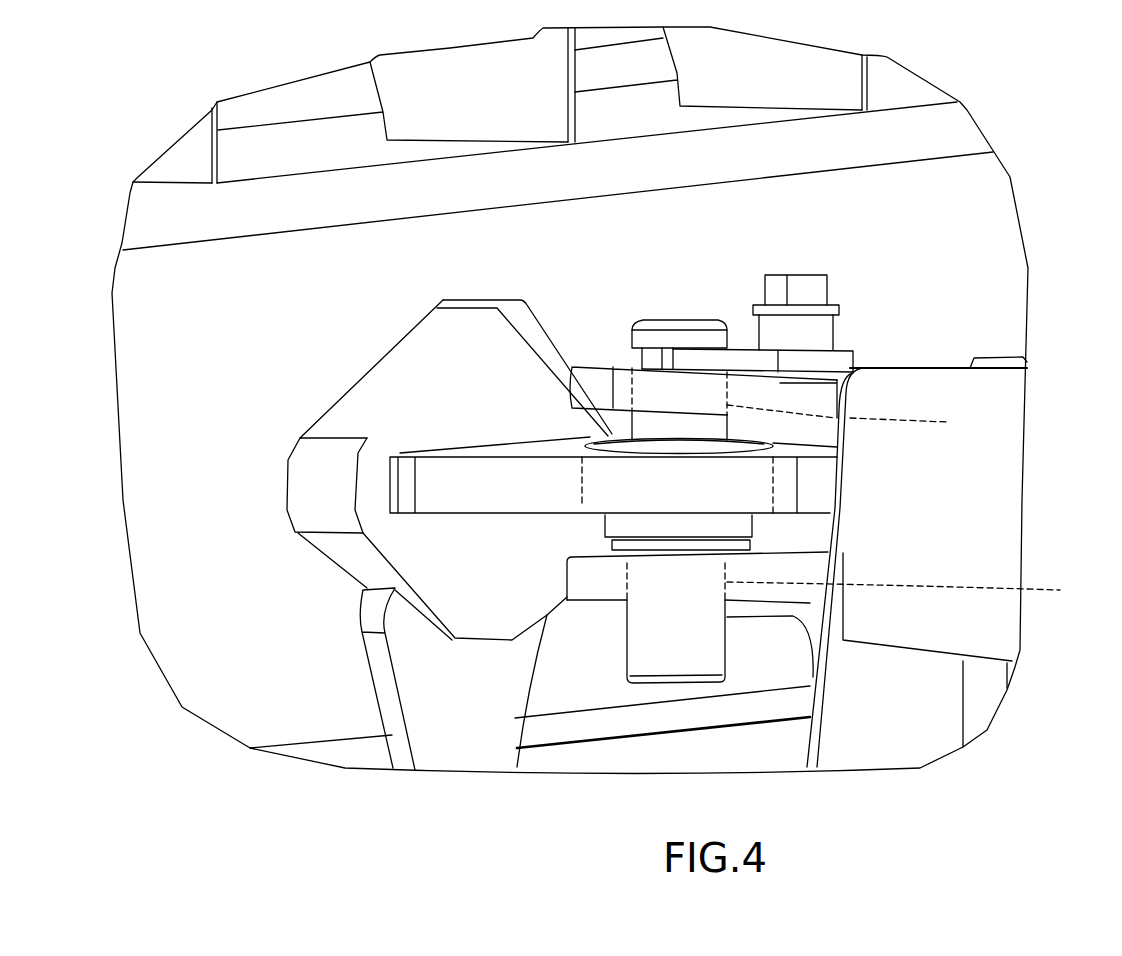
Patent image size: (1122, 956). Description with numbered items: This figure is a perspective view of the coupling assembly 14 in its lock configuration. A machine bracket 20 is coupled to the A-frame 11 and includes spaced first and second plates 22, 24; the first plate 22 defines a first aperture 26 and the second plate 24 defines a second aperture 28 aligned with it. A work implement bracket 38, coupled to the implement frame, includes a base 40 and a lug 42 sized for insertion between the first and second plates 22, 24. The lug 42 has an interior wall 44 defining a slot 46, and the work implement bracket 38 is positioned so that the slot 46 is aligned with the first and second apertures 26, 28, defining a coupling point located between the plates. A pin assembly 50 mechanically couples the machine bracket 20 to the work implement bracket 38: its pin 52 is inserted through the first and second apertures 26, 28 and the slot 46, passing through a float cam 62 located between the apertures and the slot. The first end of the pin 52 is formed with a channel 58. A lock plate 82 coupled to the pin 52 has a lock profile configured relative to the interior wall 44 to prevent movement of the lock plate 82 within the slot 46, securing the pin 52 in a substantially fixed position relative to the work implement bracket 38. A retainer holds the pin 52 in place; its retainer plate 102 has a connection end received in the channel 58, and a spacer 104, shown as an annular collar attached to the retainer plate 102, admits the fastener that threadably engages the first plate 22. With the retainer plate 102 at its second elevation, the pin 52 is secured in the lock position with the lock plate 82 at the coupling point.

The A-frame 11 is at (973, 475).
The coupling assembly 14 is at (652, 515).
The machine bracket 20 is at (798, 383).
The first plate 22 is at (830, 400).
The second plate 24 is at (828, 614).
The first aperture 26 is at (851, 418).
The second aperture 28 is at (800, 598).
The work implement bracket 38 is at (399, 463).
The base 40 is at (463, 380).
The lug 42 is at (633, 516).
The interior wall 44 is at (773, 485).
The slot 46 is at (582, 508).
The pin assembly 50 is at (681, 292).
The pin 52 is at (657, 665).
The channel 58 is at (640, 358).
The float cam 62 is at (620, 533).
The lock plate 82 is at (600, 443).
The retainer plate 102 is at (880, 367).
The spacer 104 is at (832, 323).